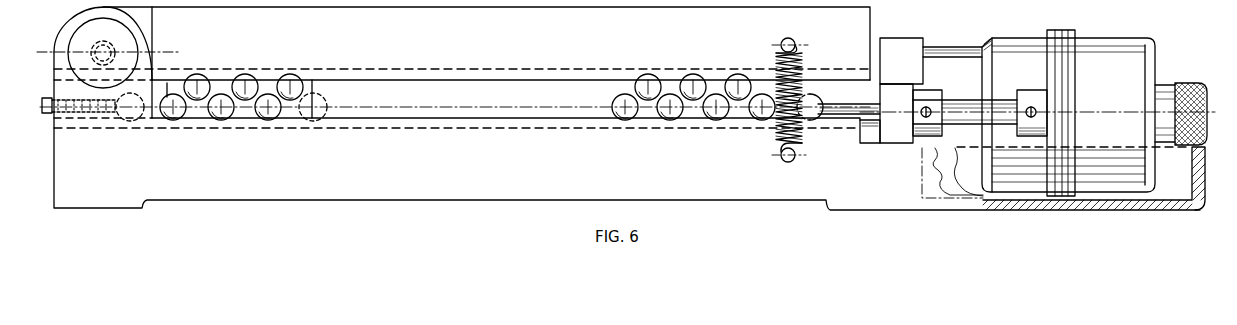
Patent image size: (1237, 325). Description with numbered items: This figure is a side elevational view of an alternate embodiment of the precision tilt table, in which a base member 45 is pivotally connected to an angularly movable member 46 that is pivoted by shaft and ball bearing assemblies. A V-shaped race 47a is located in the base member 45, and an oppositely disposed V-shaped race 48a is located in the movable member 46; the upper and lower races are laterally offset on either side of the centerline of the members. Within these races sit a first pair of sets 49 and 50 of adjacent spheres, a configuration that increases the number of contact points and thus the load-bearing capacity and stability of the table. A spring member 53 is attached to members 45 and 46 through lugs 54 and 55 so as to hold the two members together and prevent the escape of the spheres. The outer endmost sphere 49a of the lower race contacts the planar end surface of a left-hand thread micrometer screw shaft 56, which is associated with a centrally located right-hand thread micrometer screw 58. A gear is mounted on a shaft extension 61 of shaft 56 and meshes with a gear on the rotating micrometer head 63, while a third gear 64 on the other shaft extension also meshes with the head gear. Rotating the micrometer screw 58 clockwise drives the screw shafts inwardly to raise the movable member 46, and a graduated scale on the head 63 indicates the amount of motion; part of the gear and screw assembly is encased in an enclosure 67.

The base member 45 is at (484, 170).
The angularly movable member 46 is at (562, 47).
The V-shaped race 47a is at (547, 126).
The V-shaped race 48a is at (622, 69).
The set of adjacent spheres 49 is at (658, 117).
The outer endmost sphere 49a is at (838, 101).
The set of adjacent spheres 50 is at (728, 80).
The spring member 53 is at (803, 70).
The lug 54 is at (796, 40).
The lug 55 is at (797, 157).
The micrometer screw shaft 56 is at (891, 90).
The micrometer screw 58 is at (1185, 58).
The shaft extension 61 is at (993, 108).
The micrometer head 63 is at (1133, 50).
The third gear 64 is at (1055, 196).
The enclosure 67 is at (1194, 212).